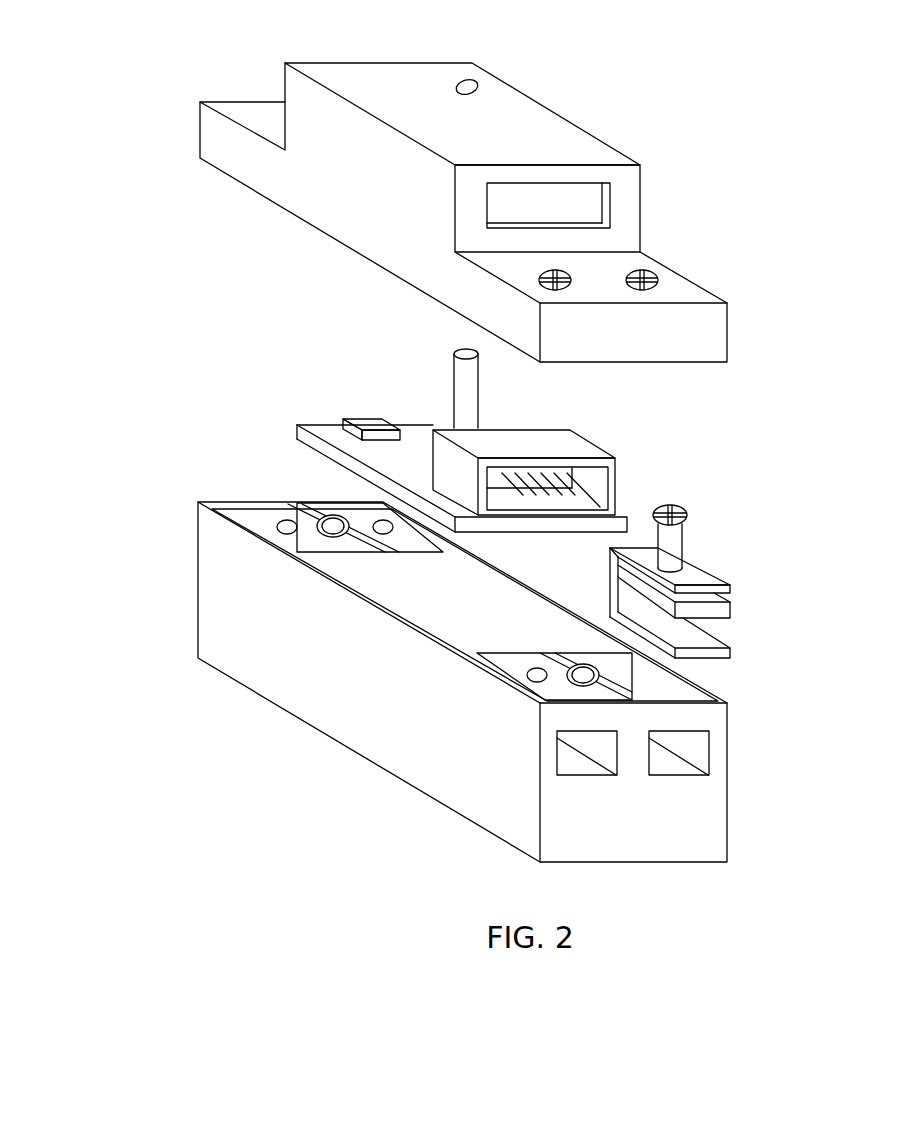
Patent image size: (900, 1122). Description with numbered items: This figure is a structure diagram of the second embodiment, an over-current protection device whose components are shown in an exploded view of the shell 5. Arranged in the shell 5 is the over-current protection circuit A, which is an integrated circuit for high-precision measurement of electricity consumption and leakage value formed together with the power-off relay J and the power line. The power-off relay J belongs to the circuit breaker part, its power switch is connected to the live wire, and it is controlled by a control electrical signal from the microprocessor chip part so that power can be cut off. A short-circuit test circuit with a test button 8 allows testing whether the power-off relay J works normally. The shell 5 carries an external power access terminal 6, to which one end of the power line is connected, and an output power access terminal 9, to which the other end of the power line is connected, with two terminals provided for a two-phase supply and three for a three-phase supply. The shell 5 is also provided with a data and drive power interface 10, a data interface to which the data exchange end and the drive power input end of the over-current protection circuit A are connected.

The shell 5 is at (572, 120).
The external power access terminal 6 is at (350, 513).
The test button 8 is at (460, 410).
The output power access terminal 9 is at (553, 685).
The data and drive power interface 10 is at (613, 457).
The power-off relay J is at (372, 420).
The over-current protection circuit A is at (298, 432).